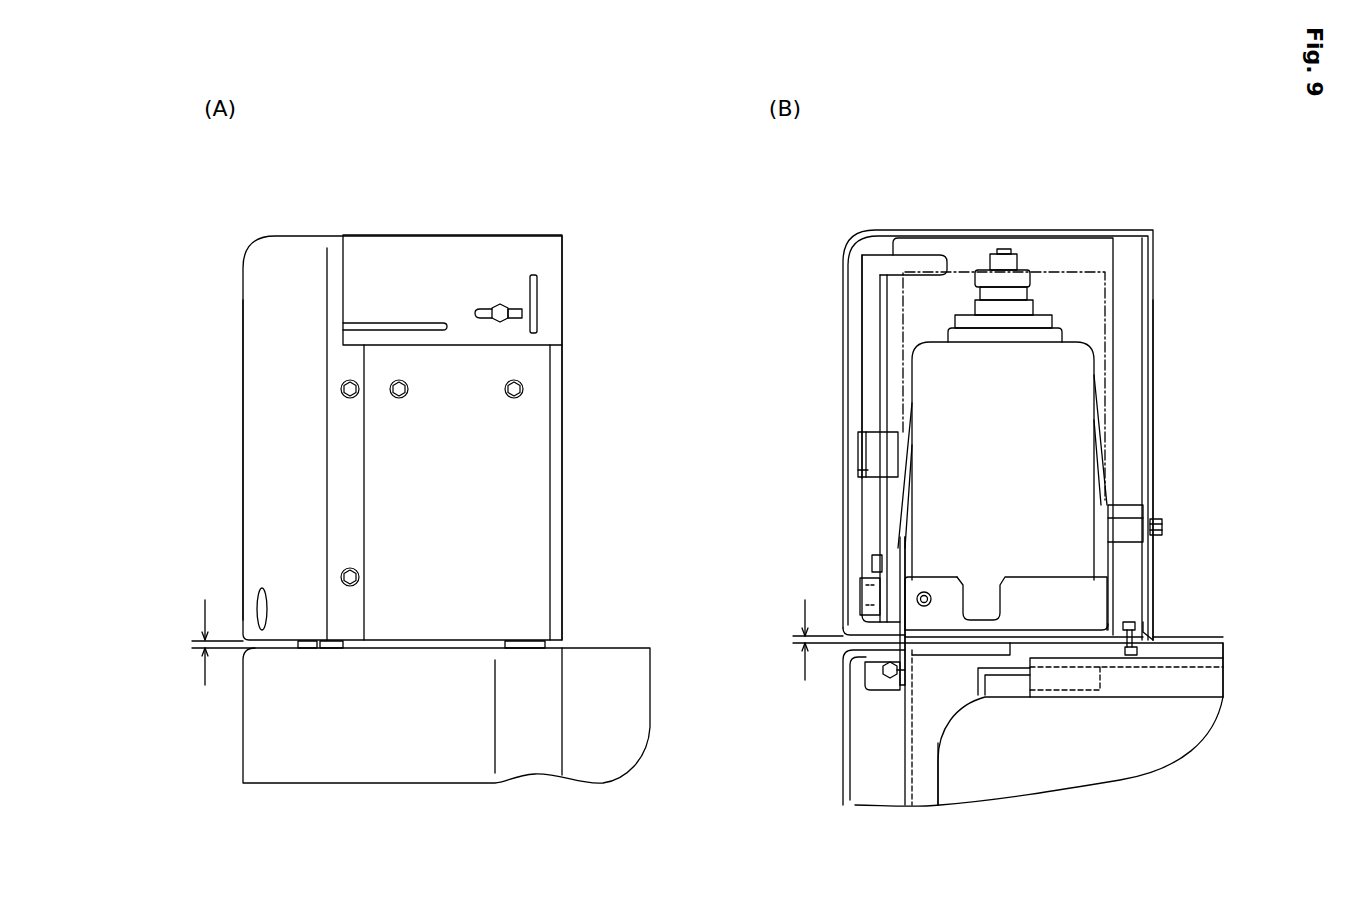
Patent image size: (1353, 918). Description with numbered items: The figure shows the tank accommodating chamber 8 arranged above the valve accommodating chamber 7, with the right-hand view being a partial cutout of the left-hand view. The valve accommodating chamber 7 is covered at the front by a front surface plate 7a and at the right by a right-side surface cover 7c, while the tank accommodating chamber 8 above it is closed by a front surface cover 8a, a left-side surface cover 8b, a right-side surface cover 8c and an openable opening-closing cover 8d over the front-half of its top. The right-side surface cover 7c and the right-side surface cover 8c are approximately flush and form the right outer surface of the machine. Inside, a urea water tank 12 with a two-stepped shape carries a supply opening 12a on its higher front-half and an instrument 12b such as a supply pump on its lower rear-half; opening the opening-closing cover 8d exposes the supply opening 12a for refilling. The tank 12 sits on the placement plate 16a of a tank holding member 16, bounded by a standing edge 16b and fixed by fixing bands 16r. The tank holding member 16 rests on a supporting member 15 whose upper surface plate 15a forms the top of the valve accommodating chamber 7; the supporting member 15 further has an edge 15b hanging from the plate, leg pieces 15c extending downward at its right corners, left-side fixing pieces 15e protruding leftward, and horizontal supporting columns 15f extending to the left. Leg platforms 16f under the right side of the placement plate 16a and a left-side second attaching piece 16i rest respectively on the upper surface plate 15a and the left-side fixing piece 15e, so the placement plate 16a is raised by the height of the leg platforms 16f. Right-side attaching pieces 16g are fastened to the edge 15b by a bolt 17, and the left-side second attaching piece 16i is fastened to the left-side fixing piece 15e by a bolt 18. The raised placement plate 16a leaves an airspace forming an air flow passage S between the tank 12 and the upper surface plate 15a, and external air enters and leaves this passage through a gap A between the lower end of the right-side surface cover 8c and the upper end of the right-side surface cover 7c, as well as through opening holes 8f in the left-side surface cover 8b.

The valve accommodating chamber 7 is at (267, 710).
The front surface plate 7a is at (605, 733).
The right-side surface cover 7c is at (395, 752).
The tank accommodating chamber 8 is at (268, 302).
The front surface cover 8a is at (457, 363).
The left-side surface cover 8b is at (555, 420).
The right-side surface cover 8c is at (272, 388).
The opening-closing cover 8d is at (403, 255).
The opening holes 8f is at (1153, 388).
The urea water tank 12 is at (1050, 375).
The supply opening 12a is at (990, 278).
The instrument 12b is at (1090, 305).
The supporting member 15 is at (845, 805).
The upper surface plate 15a is at (953, 645).
The edge 15b is at (905, 700).
The leg pieces 15c is at (920, 770).
The left-side fixing pieces 15e is at (1113, 647).
The horizontal supporting columns 15f is at (1170, 680).
The tank holding member 16 is at (1127, 468).
The placement plate 16a is at (957, 620).
The front edge 16b is at (1045, 598).
The leg platforms 16f is at (330, 650).
The right-side attaching pieces 16g is at (300, 650).
The left-side second attaching piece 16i is at (527, 650).
The fixing bands 16r is at (907, 460).
The bolt 17 is at (885, 670).
The bolt 18 is at (1127, 625).
The air flow passage S is at (405, 650).
The gap A is at (510, 642).